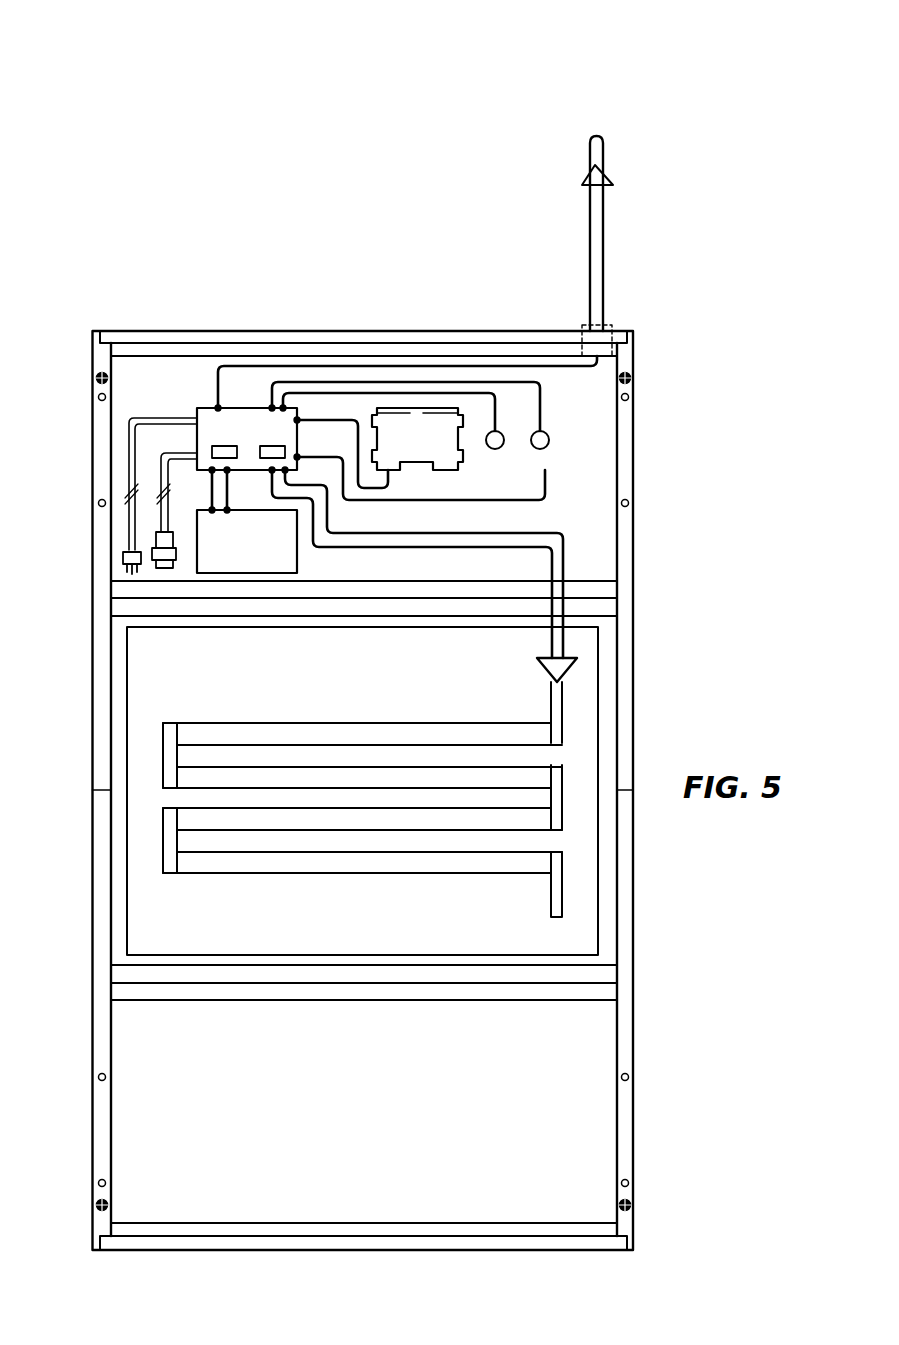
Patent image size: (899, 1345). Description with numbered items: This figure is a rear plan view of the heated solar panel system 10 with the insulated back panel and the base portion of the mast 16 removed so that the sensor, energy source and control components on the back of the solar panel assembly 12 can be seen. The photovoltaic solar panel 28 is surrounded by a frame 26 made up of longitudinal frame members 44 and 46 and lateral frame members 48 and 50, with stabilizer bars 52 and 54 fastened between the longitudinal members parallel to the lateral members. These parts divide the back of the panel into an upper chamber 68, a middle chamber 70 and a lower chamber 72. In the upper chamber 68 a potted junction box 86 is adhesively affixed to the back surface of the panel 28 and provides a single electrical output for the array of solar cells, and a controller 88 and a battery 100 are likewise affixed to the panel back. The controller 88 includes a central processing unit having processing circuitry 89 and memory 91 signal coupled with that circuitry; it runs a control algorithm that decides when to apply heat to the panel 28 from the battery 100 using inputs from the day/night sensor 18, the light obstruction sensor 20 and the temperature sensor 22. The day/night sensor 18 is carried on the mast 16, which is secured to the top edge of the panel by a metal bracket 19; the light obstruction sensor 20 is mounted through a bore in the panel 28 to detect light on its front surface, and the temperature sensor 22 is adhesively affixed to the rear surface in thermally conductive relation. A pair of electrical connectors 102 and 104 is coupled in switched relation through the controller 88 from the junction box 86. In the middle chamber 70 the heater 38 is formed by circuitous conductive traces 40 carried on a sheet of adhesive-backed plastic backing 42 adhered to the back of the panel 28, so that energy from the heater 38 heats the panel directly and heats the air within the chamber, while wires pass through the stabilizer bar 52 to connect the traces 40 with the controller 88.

The heated solar panel system 10 is at (641, 97).
The solar panel assembly 12 is at (350, 332).
The mast 16 is at (596, 136).
The day/night sensor 18 is at (588, 184).
The metal bracket 19 is at (586, 324).
The light obstruction sensor 20 is at (538, 449).
The temperature sensor 22 is at (493, 449).
The frame 26 is at (92, 908).
The solar panel 28 is at (579, 561).
The heater 38 is at (601, 925).
The conductive trace 40 is at (327, 722).
The adhesive backing 42 is at (467, 918).
The longitudinal frame member 44 is at (92, 725).
The longitudinal frame member 46 is at (634, 748).
The lateral frame member 48 is at (196, 330).
The lateral frame member 50 is at (519, 1250).
The stabilizer bar 52 is at (427, 578).
The stabilizer bar 54 is at (297, 990).
The upper chamber 68 is at (574, 458).
The middle chamber 70 is at (574, 835).
The lower chamber 72 is at (566, 1120).
The junction box 86 is at (407, 448).
The controller 88 is at (210, 408).
The processing circuitry 89 is at (212, 446).
The memory 91 is at (262, 458).
The battery 100 is at (299, 563).
The electrical connector 102 is at (130, 572).
The electrical connector 104 is at (165, 570).